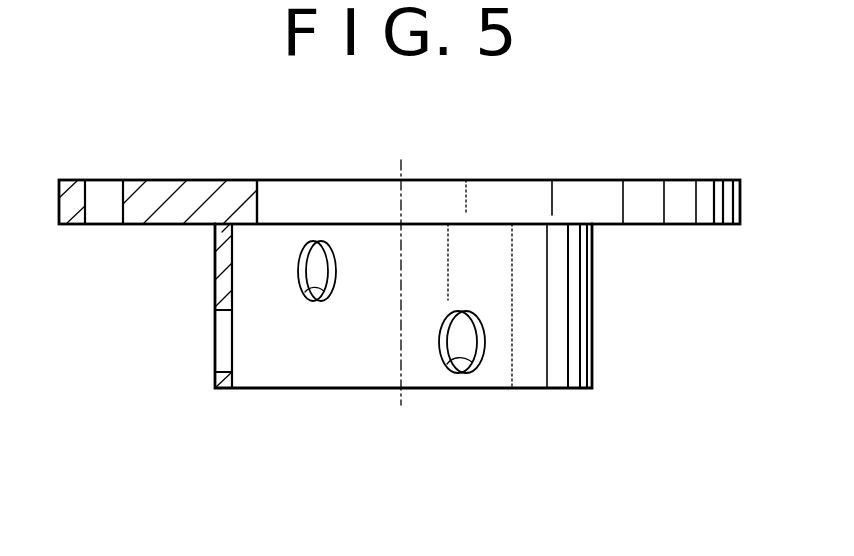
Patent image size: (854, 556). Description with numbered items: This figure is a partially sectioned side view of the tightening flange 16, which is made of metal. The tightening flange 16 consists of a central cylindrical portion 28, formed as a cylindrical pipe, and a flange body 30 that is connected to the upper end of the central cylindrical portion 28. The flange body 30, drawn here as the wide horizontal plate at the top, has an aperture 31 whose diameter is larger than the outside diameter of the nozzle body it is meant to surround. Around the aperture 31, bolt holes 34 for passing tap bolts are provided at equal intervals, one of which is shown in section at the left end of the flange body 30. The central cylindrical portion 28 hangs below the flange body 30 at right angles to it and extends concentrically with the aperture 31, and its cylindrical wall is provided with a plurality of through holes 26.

The tightening flange 16 is at (624, 160).
The through holes 26 is at (216, 323).
The central cylindrical portion 28 is at (214, 270).
The flange body 30 is at (177, 189).
The aperture 31 is at (258, 191).
The bolt holes 34 is at (87, 192).